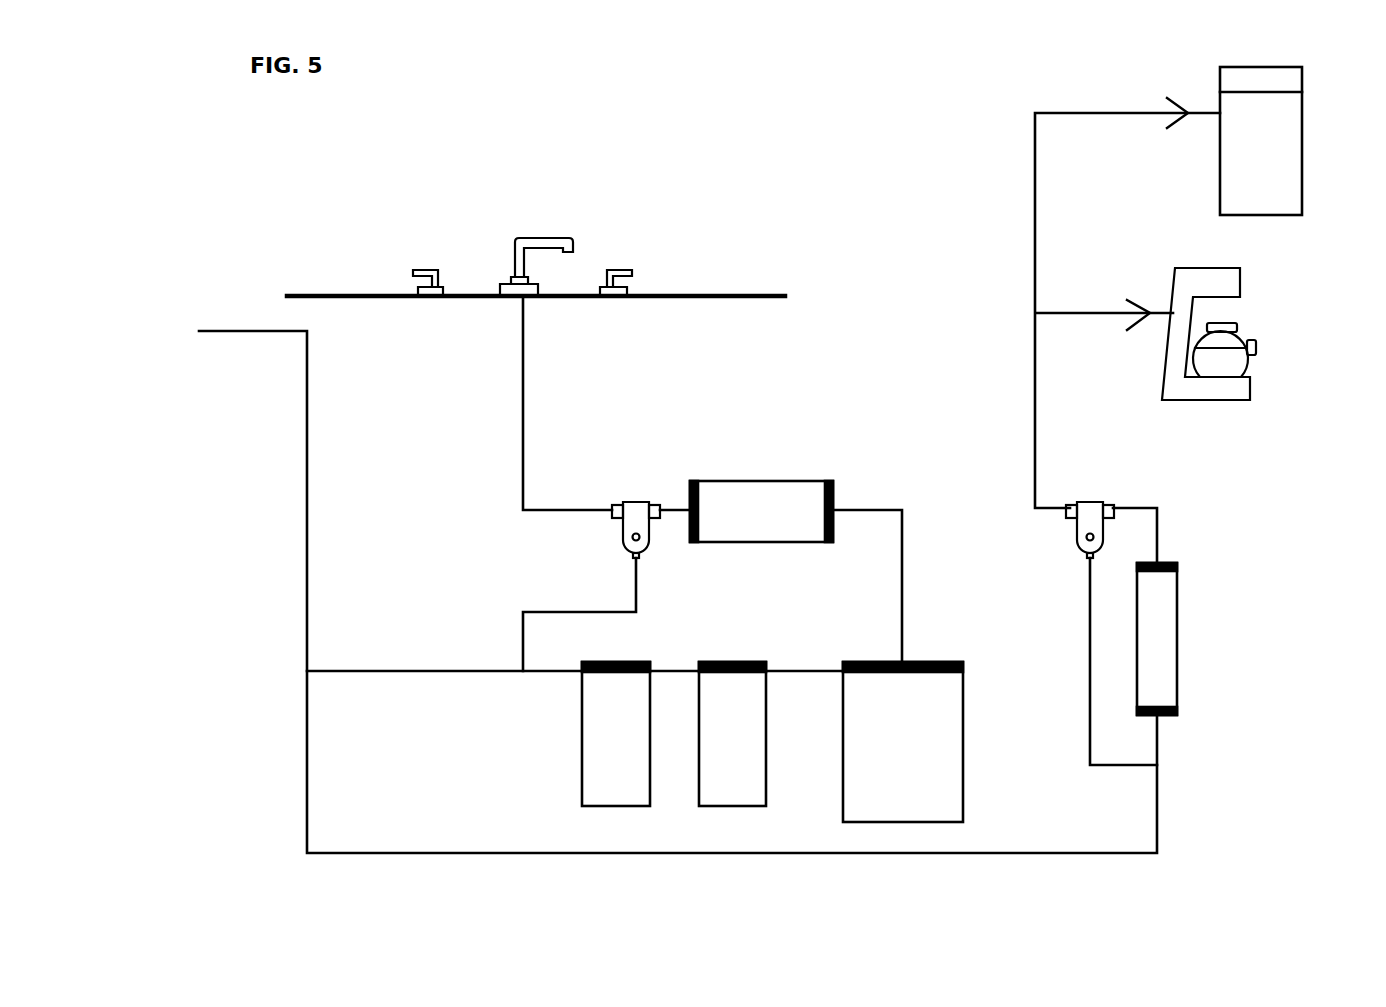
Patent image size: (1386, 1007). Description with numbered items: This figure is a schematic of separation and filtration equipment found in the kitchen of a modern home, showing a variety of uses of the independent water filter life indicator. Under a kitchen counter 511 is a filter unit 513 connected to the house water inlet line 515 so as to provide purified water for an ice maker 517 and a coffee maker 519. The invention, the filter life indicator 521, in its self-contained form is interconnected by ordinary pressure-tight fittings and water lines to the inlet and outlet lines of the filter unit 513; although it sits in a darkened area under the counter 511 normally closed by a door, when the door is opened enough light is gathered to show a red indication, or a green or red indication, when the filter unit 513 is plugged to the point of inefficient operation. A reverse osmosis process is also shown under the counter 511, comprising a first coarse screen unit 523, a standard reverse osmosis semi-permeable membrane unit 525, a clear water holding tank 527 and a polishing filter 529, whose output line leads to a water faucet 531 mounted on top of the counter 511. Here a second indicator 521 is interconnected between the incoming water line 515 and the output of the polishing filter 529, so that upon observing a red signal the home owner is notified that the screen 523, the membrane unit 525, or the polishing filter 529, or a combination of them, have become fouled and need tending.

The kitchen counter 511 is at (692, 292).
The filter unit 513 is at (1172, 618).
The house water inlet line 515 is at (264, 331).
The ice maker 517 is at (1290, 112).
The coffee maker 519 is at (1247, 390).
The independent water filter life indicator 521 is at (628, 527).
The first coarse screen unit 523 is at (589, 752).
The reverse osmosis semi-permeable membrane unit 525 is at (758, 757).
The clear water holding tank 527 is at (926, 793).
The polishing filter 529 is at (775, 473).
The water faucet 531 is at (517, 263).